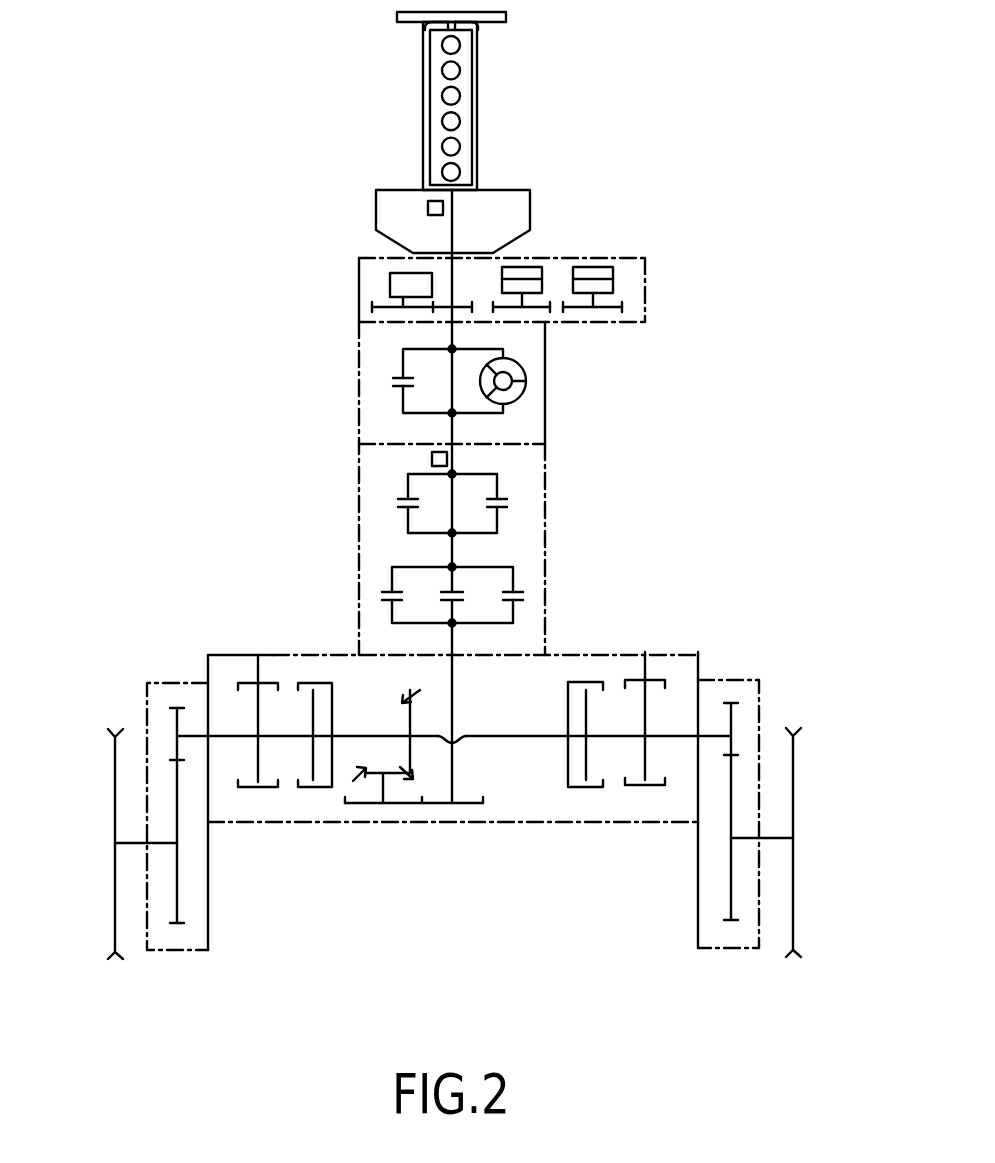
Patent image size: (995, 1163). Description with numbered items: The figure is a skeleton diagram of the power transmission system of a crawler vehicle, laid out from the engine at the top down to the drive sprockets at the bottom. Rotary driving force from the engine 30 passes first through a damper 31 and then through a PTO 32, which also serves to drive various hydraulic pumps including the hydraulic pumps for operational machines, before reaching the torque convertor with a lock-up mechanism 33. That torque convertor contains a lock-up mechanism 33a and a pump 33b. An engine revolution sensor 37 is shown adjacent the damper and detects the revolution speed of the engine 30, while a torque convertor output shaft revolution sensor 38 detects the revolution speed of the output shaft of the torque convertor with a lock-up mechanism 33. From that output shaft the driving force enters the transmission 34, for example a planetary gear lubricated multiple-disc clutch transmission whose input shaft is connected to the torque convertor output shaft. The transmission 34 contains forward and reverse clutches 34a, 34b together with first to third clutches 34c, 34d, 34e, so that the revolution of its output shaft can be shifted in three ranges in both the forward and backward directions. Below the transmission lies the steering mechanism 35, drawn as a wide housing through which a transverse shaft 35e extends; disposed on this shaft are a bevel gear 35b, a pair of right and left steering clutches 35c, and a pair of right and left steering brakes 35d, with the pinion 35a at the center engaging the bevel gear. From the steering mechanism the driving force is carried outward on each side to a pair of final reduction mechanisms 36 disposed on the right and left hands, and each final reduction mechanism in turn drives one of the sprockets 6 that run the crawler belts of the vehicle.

The sprocket 6 is at (115, 808).
The engine 30 is at (478, 82).
The damper 31 is at (518, 203).
The PTO 32 is at (645, 256).
The torque convertor with a lock-up mechanism 33 is at (545, 410).
The lock-up mechanism 33a is at (395, 383).
The pump 33b is at (523, 367).
The transmission 34 is at (545, 518).
The forward clutch 34a is at (398, 503).
The reverse clutch 34b is at (507, 497).
The first clutch 34c is at (382, 596).
The second clutch 34d is at (450, 590).
The third clutch 34e is at (523, 596).
The steering mechanism 35 is at (697, 652).
The gear rail 35a is at (393, 773).
The bevel gear 35b is at (412, 751).
The steering clutch 35c is at (317, 787).
The steering brake 35d is at (258, 787).
The transverse shaft 35e is at (543, 736).
The final reduction mechanism 36 is at (207, 952).
The engine revolution sensor 37 is at (428, 210).
The torque convertor output shaft revolution sensor 38 is at (432, 460).